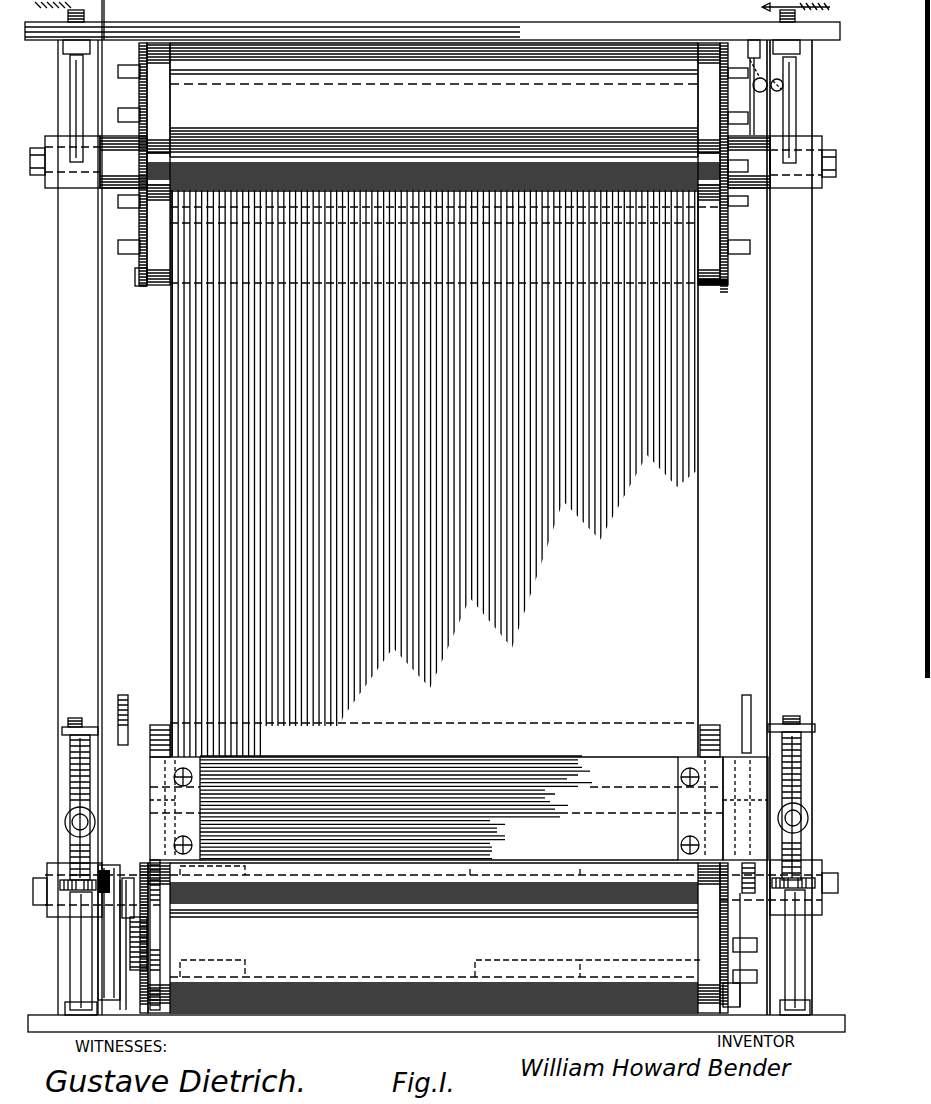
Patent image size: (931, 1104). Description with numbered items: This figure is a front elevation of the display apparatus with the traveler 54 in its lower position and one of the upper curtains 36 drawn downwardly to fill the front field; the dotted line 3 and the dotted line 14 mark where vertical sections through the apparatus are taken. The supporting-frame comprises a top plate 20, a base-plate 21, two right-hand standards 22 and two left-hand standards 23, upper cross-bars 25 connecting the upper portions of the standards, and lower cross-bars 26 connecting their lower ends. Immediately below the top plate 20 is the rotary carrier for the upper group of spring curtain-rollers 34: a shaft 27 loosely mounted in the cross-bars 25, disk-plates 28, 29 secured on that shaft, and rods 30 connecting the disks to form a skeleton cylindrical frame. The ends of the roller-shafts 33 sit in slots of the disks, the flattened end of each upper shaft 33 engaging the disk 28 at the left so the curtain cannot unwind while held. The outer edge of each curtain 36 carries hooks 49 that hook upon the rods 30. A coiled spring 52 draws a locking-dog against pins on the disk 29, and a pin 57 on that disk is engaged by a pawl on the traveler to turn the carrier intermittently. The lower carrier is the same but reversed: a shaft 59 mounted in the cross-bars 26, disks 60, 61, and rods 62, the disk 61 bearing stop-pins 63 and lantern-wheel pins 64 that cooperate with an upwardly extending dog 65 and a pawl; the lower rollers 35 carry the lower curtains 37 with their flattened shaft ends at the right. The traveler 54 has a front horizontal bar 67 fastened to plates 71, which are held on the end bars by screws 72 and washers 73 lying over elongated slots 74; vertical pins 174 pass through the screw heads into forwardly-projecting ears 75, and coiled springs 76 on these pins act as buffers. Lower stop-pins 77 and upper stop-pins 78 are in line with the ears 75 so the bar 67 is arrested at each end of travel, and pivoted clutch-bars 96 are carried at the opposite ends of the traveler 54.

The section line 3 is at (788, 9).
The section line 14 is at (114, 20).
The top plate 20 is at (52, 40).
The base-plate 21 is at (362, 1032).
The right-hand standards 22 is at (789, 527).
The left-hand standards 23 is at (80, 507).
The cross-bars 25 is at (50, 188).
The cross-bars 26 is at (60, 915).
The shaft 27 is at (38, 148).
The disk-plate 28 is at (138, 283).
The disk-plate 29 is at (728, 280).
The rods 30 is at (160, 70).
The roller-shaft 33 is at (126, 78).
The upper curtain-rollers 34 is at (160, 108).
The lower curtain-rollers 35 is at (165, 935).
The upper curtains 36 is at (434, 400).
The lower curtains 37 is at (434, 938).
The hooks 49 is at (580, 956).
The coiled spring 52 is at (748, 62).
The traveler 54 is at (435, 741).
The pin 57 is at (752, 128).
The shaft 59 is at (830, 900).
The disk 60 is at (740, 996).
The disk 61 is at (117, 938).
The rods 62 is at (170, 884).
The stop-pins 63 is at (132, 925).
The pins 64 is at (118, 918).
The dog 65 is at (105, 955).
The front horizontal bar 67 is at (436, 808).
The plates 71 is at (459, 808).
The screws 72 is at (72, 830).
The washers 73 is at (65, 826).
The elongated slots 74 is at (70, 760).
The ears 75 is at (62, 727).
The coiled springs 76 is at (70, 795).
The stop-pins 77 is at (65, 1005).
The stop-pins 78 is at (70, 97).
The clutch-bars 96 is at (124, 695).
The vertical pins 174 is at (70, 772).